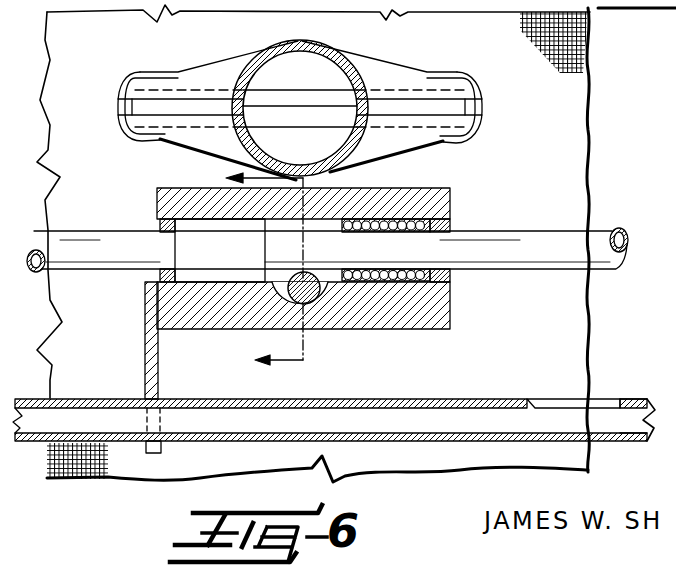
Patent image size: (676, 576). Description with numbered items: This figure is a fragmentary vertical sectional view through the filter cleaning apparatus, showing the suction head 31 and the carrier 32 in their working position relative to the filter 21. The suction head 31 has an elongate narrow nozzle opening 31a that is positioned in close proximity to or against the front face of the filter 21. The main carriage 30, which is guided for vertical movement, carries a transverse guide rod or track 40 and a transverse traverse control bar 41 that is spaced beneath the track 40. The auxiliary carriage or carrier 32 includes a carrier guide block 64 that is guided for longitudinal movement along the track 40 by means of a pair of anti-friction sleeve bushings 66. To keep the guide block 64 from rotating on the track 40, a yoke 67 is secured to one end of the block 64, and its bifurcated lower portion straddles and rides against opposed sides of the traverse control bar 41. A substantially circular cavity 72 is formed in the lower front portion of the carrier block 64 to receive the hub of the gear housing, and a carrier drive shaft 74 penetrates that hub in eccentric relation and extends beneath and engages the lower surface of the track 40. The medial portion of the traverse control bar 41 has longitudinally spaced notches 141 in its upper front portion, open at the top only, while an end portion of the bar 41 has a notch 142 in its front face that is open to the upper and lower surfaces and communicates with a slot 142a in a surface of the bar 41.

The filter 21 is at (105, 55).
The suction head 31 is at (415, 72).
The nozzle opening 31a is at (316, 104).
The auxiliary carriage or carrier 32 is at (157, 191).
The transverse guide rod or track 40 is at (546, 252).
The carrier guide block 64 is at (452, 196).
The anti-friction sleeve bushings 66 is at (228, 258).
The yoke 67 is at (145, 358).
The circular cavity 72 is at (279, 298).
The carrier drive shaft 74 is at (321, 294).
The main carriage 30 is at (399, 400).
The traverse control bar 41 is at (535, 398).
The notches 141 is at (216, 398).
The notch 142 is at (605, 399).
The slot 142a is at (610, 440).